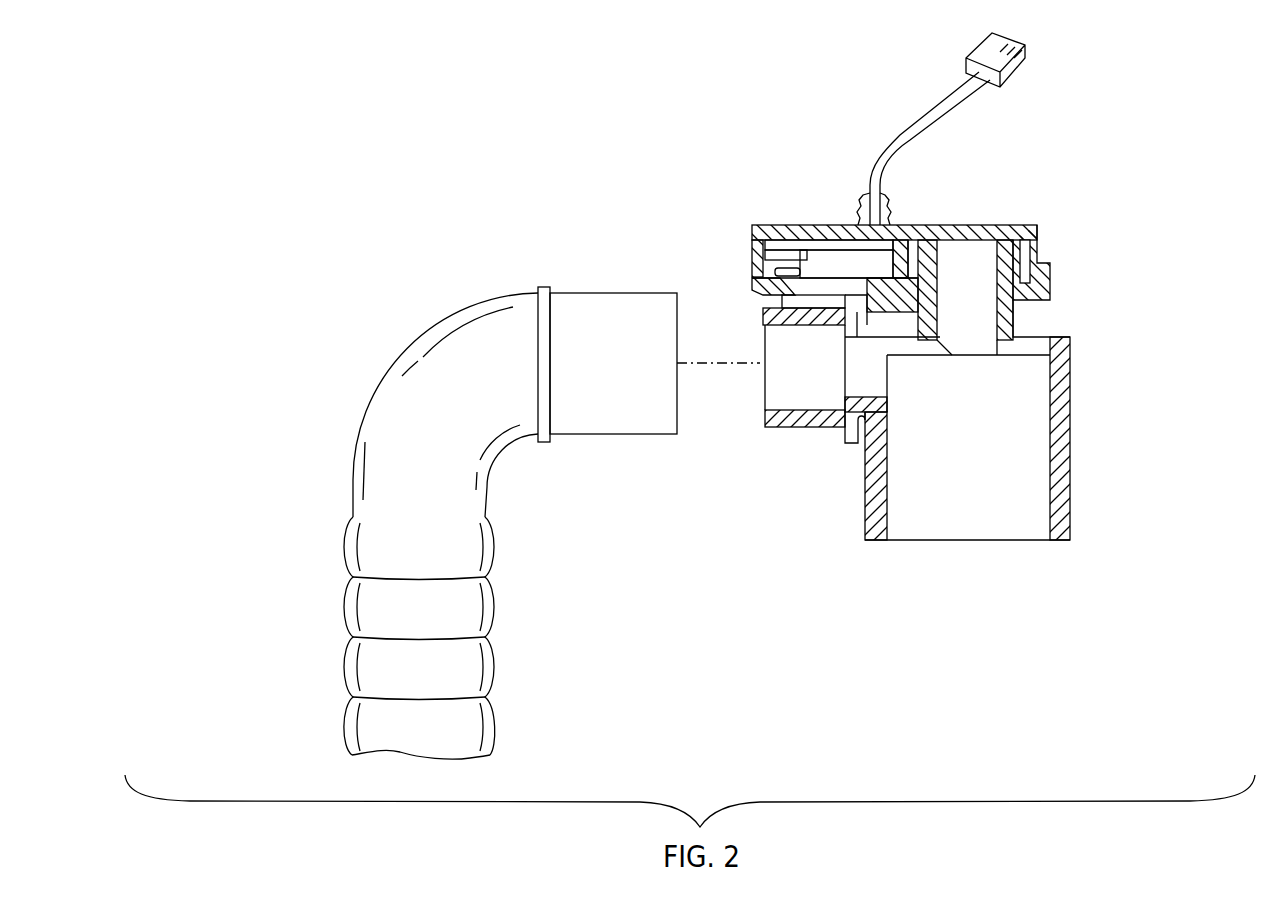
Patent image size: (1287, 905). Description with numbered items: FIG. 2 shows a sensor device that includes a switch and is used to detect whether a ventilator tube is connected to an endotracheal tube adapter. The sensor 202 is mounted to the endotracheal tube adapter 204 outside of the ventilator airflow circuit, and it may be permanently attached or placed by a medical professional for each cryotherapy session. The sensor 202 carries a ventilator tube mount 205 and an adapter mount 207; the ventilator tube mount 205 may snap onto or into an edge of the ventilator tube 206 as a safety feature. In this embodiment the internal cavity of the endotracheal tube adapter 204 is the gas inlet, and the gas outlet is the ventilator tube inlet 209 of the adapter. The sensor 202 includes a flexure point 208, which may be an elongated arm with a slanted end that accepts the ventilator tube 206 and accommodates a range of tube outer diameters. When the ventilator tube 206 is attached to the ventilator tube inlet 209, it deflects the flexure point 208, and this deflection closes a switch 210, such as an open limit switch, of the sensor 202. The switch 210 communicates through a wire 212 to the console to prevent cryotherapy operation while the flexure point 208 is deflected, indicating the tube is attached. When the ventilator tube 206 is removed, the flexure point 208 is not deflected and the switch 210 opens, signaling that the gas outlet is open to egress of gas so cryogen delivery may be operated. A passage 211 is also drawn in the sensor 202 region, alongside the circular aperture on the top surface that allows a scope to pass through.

The sensor 202 is at (988, 223).
The endotracheal tube adapter 204 is at (1072, 490).
The ventilator tube mount 205 is at (757, 300).
The ventilator tube 206 is at (368, 437).
The adapter mount 207 is at (1052, 238).
The flexure point 208 is at (753, 287).
The ventilator tube inlet 209 is at (793, 427).
The switch 210 is at (767, 258).
The passage 211 is at (960, 223).
The wire 212 is at (930, 115).